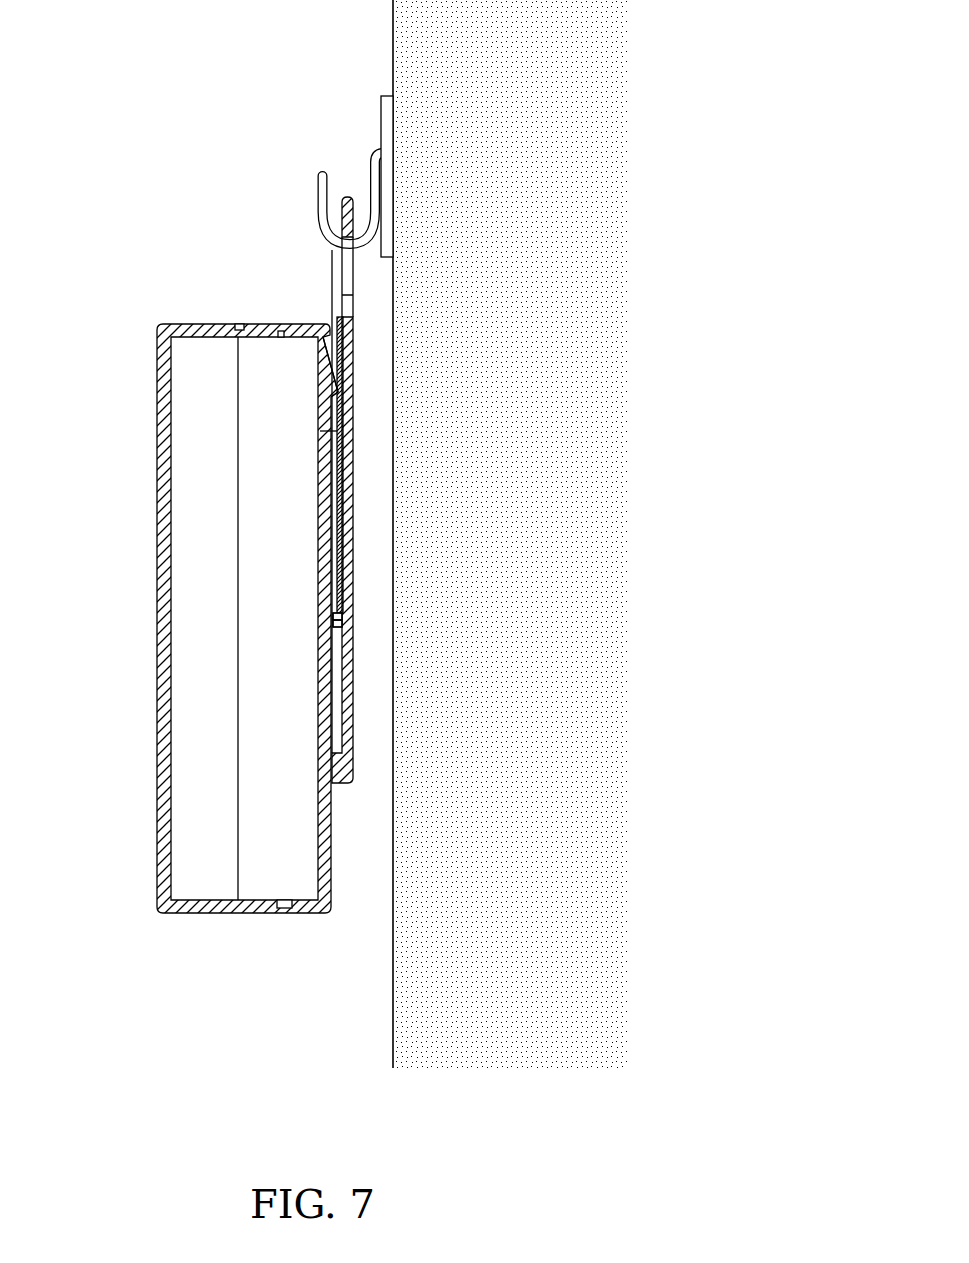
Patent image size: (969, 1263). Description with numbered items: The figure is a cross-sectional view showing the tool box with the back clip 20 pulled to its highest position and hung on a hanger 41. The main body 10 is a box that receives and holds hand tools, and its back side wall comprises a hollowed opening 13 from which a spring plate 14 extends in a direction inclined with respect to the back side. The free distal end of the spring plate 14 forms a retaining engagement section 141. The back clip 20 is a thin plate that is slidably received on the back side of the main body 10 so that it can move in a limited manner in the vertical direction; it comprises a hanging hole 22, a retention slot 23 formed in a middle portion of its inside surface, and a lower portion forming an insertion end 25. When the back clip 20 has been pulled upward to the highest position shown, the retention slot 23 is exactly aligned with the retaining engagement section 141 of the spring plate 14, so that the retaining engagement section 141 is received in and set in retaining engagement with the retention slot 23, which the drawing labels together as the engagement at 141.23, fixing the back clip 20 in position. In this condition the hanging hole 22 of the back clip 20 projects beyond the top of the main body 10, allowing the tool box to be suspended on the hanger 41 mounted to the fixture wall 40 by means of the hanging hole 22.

The main body 10 is at (157, 368).
The hollowed opening 13 is at (323, 398).
The spring plate 14 is at (345, 383).
The engaging end and slot 141.23 is at (347, 422).
The retaining engagement section 141 is at (347, 422).
The retention slot 23 is at (347, 422).
The back clip 20 is at (353, 655).
The hanging hole 22 is at (345, 283).
The insertion end 25 is at (335, 428).
The fixture wall 40 is at (410, 46).
The hanger 41 is at (325, 197).